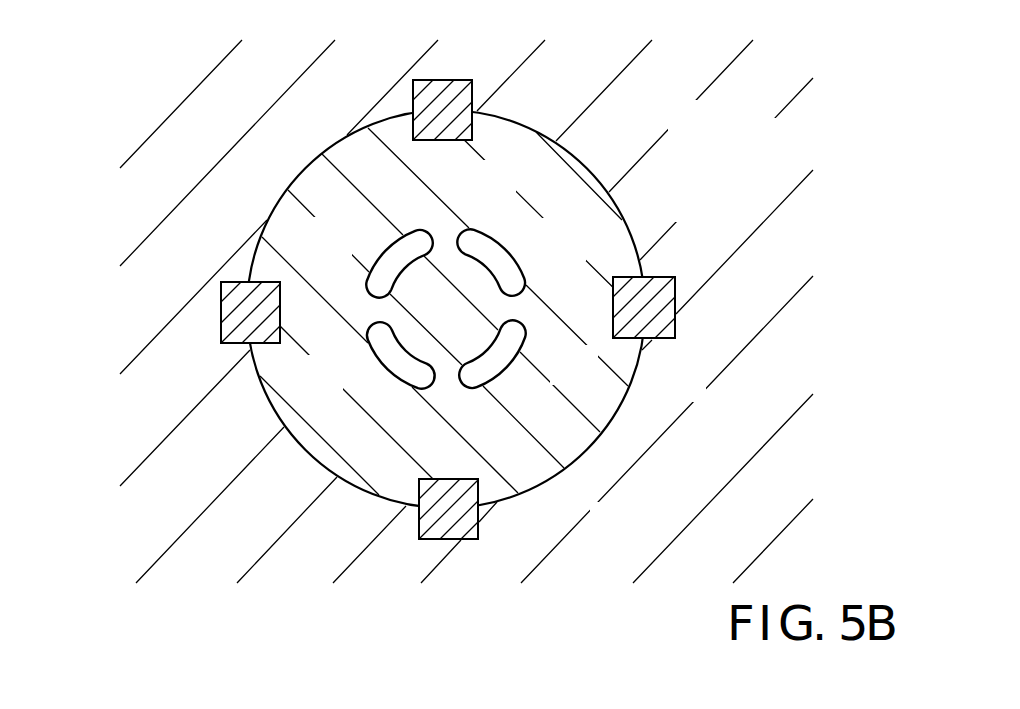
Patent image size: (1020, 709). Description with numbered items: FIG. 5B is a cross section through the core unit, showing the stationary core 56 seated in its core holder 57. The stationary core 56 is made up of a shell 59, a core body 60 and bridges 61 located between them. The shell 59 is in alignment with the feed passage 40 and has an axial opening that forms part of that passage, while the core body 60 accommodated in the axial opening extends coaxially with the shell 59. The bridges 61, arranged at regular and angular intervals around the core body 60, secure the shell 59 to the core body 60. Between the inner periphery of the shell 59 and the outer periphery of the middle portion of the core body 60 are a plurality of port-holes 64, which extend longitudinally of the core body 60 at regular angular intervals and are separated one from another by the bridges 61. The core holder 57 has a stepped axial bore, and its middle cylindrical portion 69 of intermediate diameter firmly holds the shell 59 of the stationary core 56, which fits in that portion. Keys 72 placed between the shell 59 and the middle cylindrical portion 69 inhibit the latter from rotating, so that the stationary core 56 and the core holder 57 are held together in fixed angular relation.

The feed passage 40 is at (520, 353).
The stationary core 56 is at (527, 296).
The core holder 57 is at (723, 338).
The shell 59 is at (568, 221).
The core body 60 is at (598, 222).
The bridges 61 is at (440, 243).
The port-holes 64 is at (385, 255).
The middle cylindrical portion 69 is at (620, 412).
The keys 72 is at (652, 323).